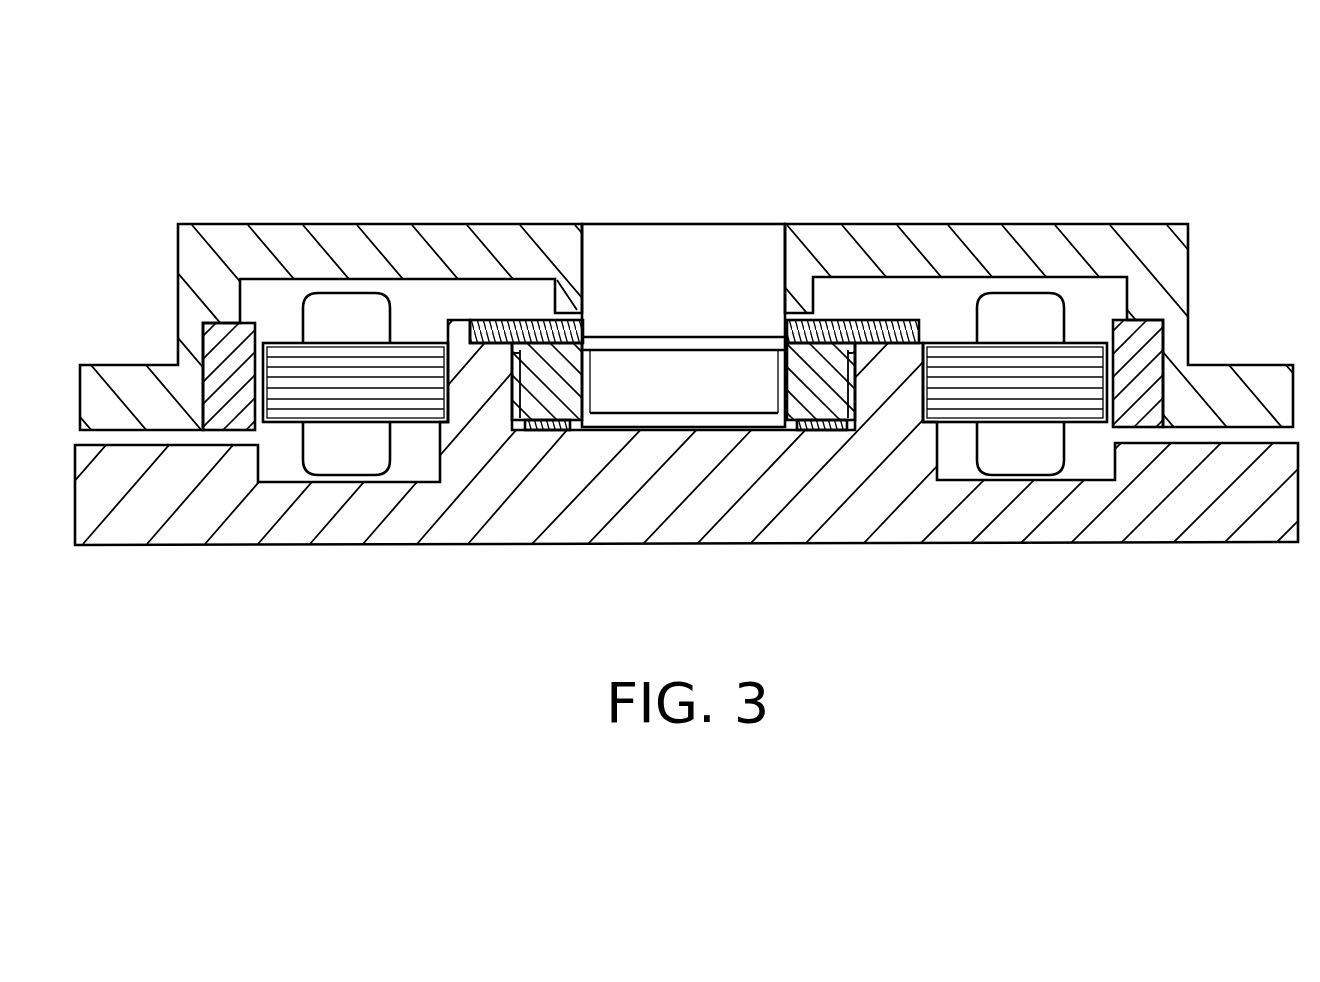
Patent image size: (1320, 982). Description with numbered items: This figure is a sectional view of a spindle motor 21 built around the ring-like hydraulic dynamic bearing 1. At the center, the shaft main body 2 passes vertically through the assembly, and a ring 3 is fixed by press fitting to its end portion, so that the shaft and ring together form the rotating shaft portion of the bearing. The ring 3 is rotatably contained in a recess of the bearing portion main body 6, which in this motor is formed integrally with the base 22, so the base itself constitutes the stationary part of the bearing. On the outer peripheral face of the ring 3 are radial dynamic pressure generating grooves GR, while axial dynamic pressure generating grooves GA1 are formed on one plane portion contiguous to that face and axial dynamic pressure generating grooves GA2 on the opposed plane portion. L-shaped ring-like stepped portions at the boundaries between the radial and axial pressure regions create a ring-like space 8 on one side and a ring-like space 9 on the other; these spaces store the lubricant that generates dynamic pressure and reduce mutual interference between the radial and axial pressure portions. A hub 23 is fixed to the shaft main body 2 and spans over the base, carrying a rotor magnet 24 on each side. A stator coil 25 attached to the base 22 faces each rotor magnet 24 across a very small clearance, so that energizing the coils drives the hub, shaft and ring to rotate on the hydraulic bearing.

The ring-like hydraulic dynamic bearing 1 is at (688, 204).
The shaft main body 2 is at (634, 250).
The ring 3 is at (573, 387).
The bearing portion main body 6 is at (908, 330).
The ring-like space 8 is at (850, 325).
The ring-like space 9 is at (857, 383).
The spindle motor 21 is at (921, 137).
The base 22 is at (518, 520).
The hub 23 is at (347, 240).
The rotor magnet 24 is at (203, 362).
The stator coil 25 is at (416, 412).
The axial dynamic pressure generating grooves GA1 is at (547, 322).
The axial dynamic pressure generating grooves GA2 is at (807, 428).
The radial dynamic pressure generating grooves GR is at (858, 383).